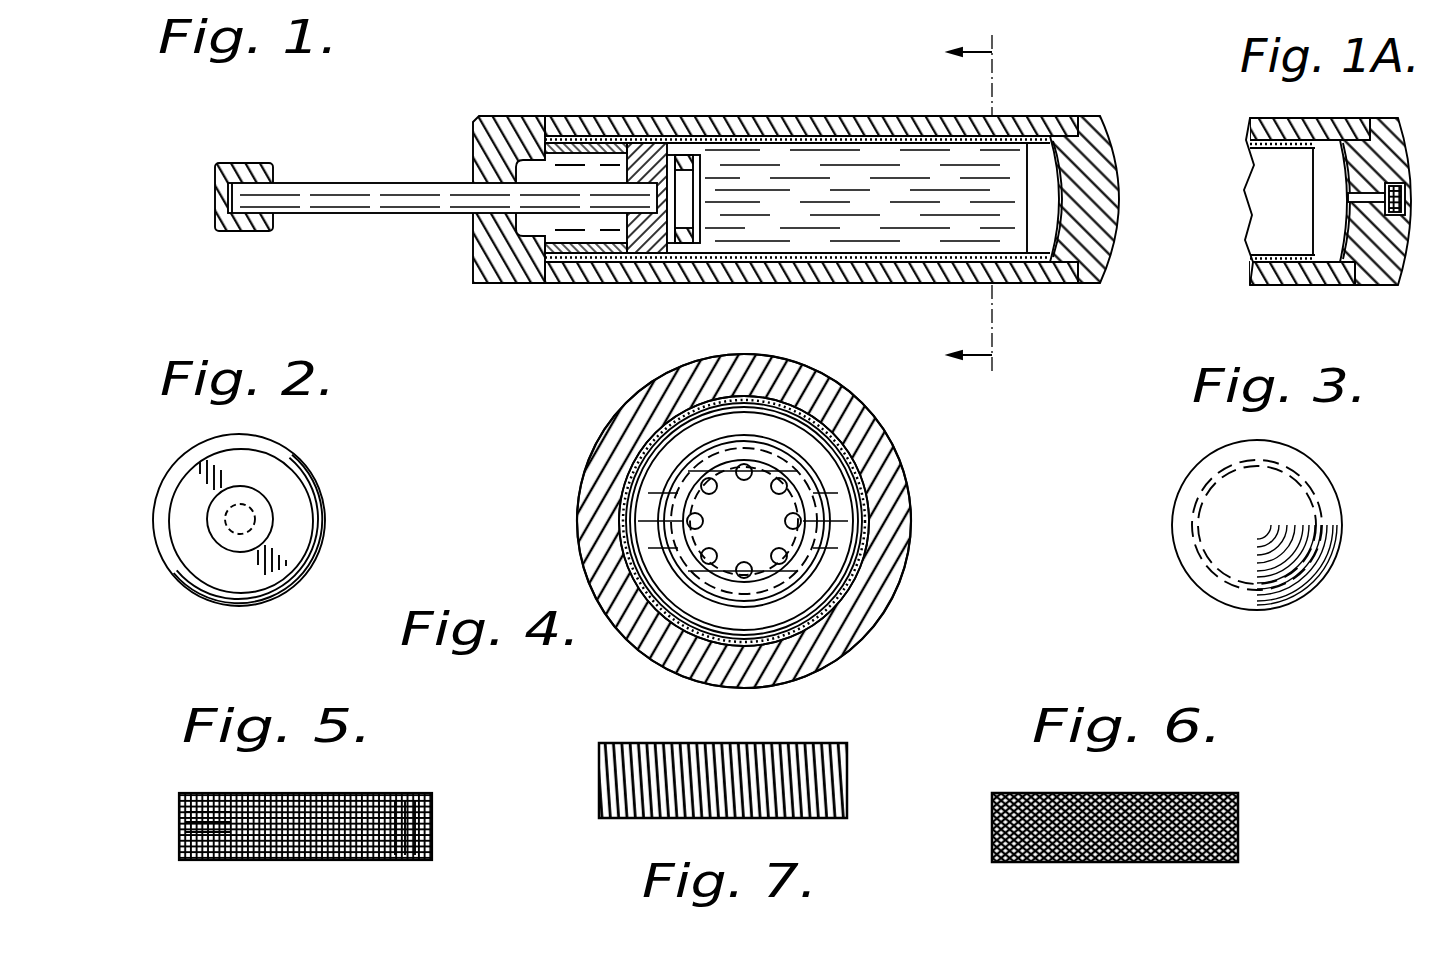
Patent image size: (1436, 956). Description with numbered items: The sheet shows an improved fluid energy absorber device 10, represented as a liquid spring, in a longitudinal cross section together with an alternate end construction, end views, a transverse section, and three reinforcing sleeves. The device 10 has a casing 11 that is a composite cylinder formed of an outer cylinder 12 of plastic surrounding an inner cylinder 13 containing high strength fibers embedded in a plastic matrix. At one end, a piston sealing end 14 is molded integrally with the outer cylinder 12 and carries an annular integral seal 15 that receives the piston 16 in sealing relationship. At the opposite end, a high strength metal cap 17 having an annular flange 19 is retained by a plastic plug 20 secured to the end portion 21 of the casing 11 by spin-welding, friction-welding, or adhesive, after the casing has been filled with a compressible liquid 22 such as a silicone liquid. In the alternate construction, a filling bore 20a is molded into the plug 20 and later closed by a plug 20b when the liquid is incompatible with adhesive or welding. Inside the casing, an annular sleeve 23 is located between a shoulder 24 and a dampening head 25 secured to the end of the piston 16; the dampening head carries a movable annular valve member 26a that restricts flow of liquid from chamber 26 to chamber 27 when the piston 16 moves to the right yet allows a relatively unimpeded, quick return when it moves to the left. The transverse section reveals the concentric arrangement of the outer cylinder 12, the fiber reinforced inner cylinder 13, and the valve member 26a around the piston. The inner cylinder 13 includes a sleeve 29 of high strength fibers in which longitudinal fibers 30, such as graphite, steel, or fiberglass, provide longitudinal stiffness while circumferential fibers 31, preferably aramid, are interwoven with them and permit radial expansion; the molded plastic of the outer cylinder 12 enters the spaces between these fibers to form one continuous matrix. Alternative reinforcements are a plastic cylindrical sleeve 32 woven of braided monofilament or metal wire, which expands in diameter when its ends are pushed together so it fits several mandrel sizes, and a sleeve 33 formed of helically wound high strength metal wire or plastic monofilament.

In FIG. 1, the fluid energy absorber device 10 is at (726, 205).
In FIG. 1A, the fluid energy absorber device 10 is at (1309, 207).
In FIG. 2, the fluid energy absorber device 10 is at (234, 520).
In FIG. 4, the fluid energy absorber device 10 is at (749, 521).
In FIG. 1, the casing 11 is at (900, 266).
In FIG. 1A, the casing 11 is at (1335, 105).
In FIG. 4, the casing 11 is at (832, 395).
In FIG. 1, the outer cylinder 12 is at (815, 263).
In FIG. 1A, the outer cylinder 12 is at (1275, 148).
In FIG. 4, the outer cylinder 12 is at (640, 525).
In FIG. 1, the inner cylinder 13 is at (890, 253).
In FIG. 1A, the inner cylinder 13 is at (1262, 160).
In FIG. 4, the inner cylinder 13 is at (842, 435).
In FIG. 1, the piston sealing end 14 is at (488, 172).
In FIG. 2, the piston sealing end 14 is at (185, 490).
In FIG. 1, the annular integral seal 15 is at (535, 227).
In FIG. 1, the piston 16 is at (345, 205).
In FIG. 2, the piston 16 is at (255, 505).
In FIG. 1, the metal cap 17 is at (1060, 222).
In FIG. 1, the annular flange 19 is at (1040, 118).
In FIG. 3, the annular flange 19 is at (1312, 543).
In FIG. 1, the plastic plug 20 is at (1129, 222).
In FIG. 1A, the plastic plug 20 is at (1339, 207).
In FIG. 3, the plastic plug 20 is at (1287, 525).
In FIG. 1A, the filling bore 20a is at (1383, 200).
In FIG. 1A, the plug 20b is at (1400, 183).
In FIG. 1, the end portion 21 is at (1062, 283).
In FIG. 1, the compressible liquid 22 is at (920, 116).
In FIG. 4, the compressible liquid 22 is at (832, 660).
In FIG. 1, the annular sleeve 23 is at (590, 142).
In FIG. 1, the shoulder 24 is at (545, 262).
In FIG. 1, the dampening head 25 is at (650, 255).
In FIG. 4, the dampening head 25 is at (855, 570).
In FIG. 1, the chamber 26 is at (745, 210).
In FIG. 4, the chamber 26 is at (652, 545).
In FIG. 1, the movable annular valve member 26a is at (702, 168).
In FIG. 4, the movable annular valve member 26a is at (826, 520).
In FIG. 1, the chamber 27 is at (582, 255).
In FIG. 4, the sleeve 29 is at (862, 475).
In FIG. 5, the sleeve 29 is at (268, 826).
In FIG. 5, the fibers 30 is at (412, 835).
In FIG. 5, the fibers 31 is at (200, 833).
In FIG. 6, the plastic cylindrical sleeve 32 is at (1188, 863).
In FIG. 7, the sleeve 33 is at (650, 745).